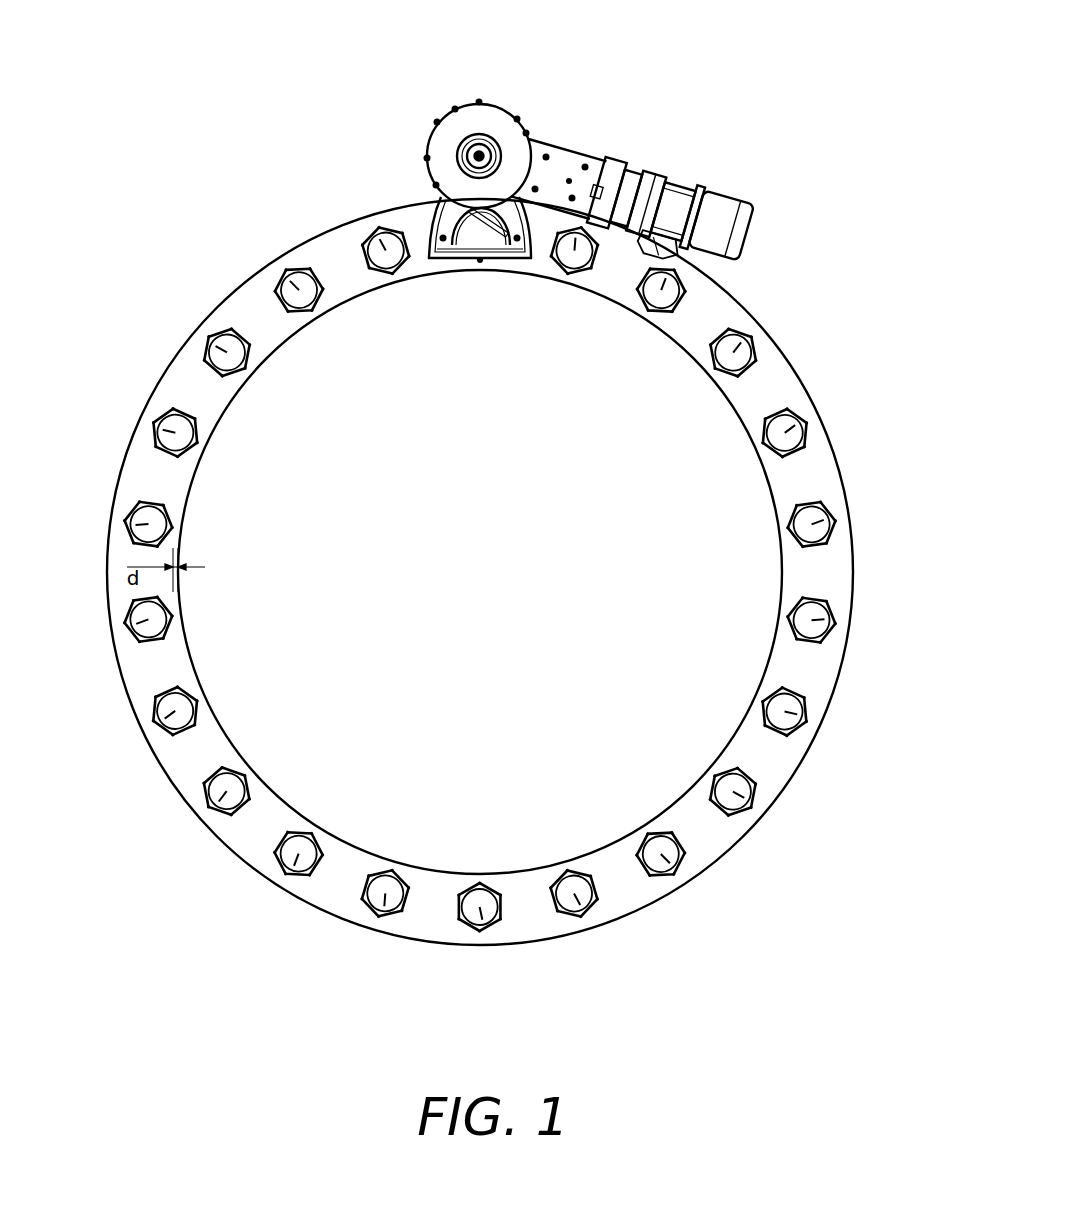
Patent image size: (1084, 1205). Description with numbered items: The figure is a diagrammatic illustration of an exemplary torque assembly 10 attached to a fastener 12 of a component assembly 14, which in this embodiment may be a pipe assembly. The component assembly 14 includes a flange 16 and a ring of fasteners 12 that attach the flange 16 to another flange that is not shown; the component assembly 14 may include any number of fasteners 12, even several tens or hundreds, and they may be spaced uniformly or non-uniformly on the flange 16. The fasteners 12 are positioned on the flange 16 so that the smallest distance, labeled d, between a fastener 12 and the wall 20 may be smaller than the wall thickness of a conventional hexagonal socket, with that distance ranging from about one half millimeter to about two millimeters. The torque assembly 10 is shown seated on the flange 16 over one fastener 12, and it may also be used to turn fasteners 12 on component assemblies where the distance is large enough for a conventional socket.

The torque assembly 10 is at (411, 106).
The fastener 12 is at (125, 527).
The component assembly 14 is at (522, 572).
The flange 16 is at (811, 478).
The wall 20 is at (192, 483).